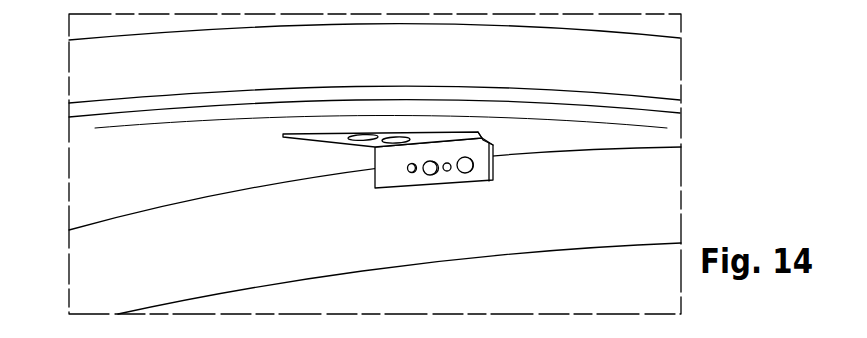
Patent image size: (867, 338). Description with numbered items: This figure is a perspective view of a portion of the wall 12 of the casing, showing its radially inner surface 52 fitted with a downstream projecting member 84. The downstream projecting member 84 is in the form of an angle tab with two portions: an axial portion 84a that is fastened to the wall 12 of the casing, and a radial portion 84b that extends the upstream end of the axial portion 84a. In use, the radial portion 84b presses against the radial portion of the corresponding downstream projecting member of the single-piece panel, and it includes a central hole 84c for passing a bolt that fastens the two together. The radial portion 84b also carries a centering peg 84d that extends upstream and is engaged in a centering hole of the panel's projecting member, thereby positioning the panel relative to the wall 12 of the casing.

The wall 12 is at (47, 199).
The radially inner surface 52 is at (112, 152).
The downstream projecting member 84 is at (423, 149).
The axial portion 84a is at (435, 136).
The radial portion 84b is at (388, 165).
The central hole 84c is at (430, 175).
The centering peg 84d is at (466, 173).